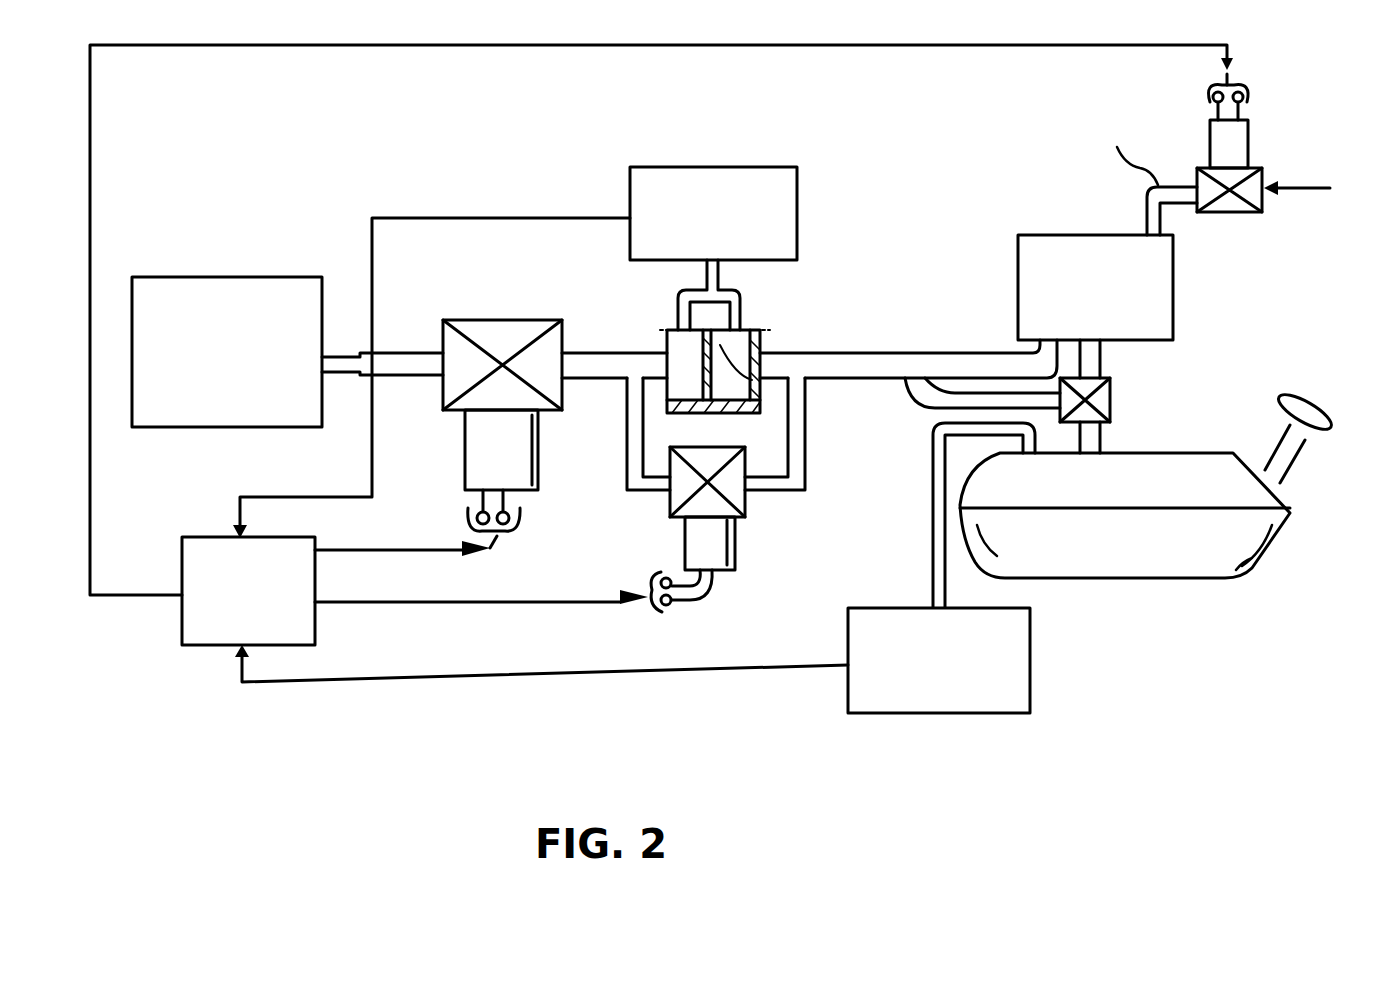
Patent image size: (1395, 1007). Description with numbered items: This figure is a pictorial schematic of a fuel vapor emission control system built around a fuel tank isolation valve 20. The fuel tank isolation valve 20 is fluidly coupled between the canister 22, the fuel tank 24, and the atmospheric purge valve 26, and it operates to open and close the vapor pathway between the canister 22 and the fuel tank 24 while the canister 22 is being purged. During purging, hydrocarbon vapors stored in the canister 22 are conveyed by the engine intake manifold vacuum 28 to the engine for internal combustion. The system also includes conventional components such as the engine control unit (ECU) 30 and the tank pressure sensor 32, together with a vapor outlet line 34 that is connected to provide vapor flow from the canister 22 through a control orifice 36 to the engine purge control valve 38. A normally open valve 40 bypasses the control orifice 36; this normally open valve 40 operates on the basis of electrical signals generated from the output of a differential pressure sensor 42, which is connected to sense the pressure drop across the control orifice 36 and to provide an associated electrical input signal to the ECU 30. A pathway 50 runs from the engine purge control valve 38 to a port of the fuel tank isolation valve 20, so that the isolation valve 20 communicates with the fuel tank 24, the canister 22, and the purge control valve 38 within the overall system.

The fuel tank isolation valve 20 is at (1115, 395).
The canister 22 is at (1040, 235).
The fuel tank 24 is at (1165, 452).
The atmospheric purge valve 26 is at (1255, 168).
The engine intake manifold vacuum 28 is at (200, 277).
The engine control unit (ECU) 30 is at (185, 645).
The tank pressure sensor 32 is at (1030, 652).
The vapor outlet line 34 is at (862, 353).
The control orifice 36 is at (766, 330).
The engine purge control valve 38 is at (556, 410).
The normally open valve 40 is at (742, 520).
The differential pressure sensor 42 is at (700, 167).
The pathway 50 is at (926, 406).